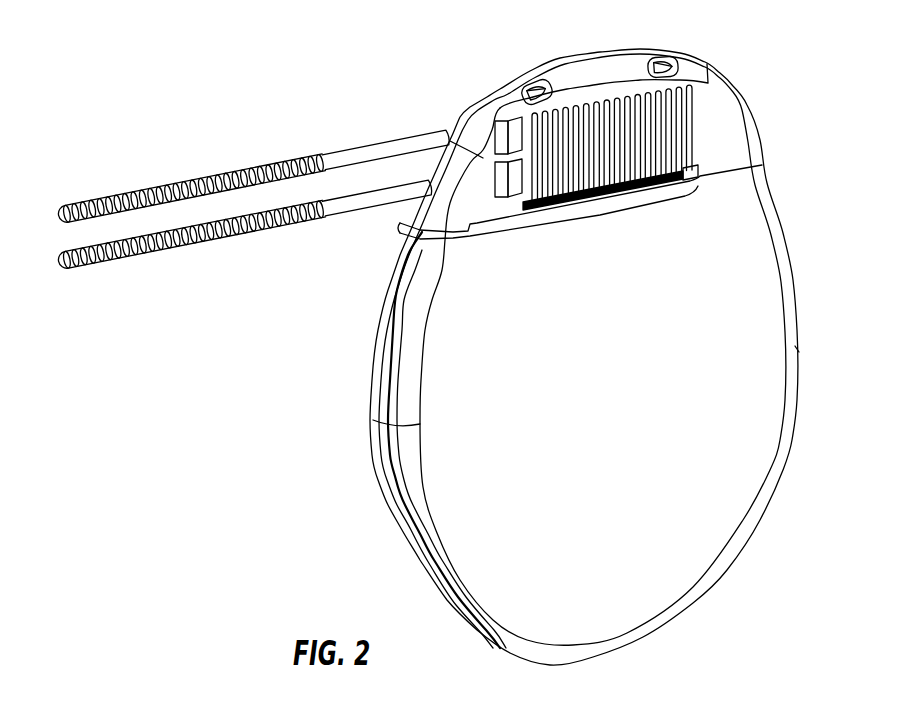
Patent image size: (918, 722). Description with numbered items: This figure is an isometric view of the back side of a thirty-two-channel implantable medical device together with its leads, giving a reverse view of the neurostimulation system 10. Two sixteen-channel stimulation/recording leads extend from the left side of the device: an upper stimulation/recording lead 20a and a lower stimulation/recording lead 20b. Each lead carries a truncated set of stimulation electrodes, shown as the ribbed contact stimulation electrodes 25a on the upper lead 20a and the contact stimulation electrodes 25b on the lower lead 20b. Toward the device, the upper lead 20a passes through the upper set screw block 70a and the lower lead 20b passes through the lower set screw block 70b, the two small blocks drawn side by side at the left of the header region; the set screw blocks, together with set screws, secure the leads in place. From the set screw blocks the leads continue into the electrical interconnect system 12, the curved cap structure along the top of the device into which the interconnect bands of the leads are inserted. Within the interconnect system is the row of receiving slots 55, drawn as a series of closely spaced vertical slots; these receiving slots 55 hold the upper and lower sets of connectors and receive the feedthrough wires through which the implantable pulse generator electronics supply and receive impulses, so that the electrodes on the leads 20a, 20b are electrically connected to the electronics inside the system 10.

The neurostimulation system 10 is at (713, 34).
The electrical interconnect system 12 is at (603, 50).
The upper stimulation/recording lead 20a is at (380, 146).
The lower stimulation/recording lead 20b is at (373, 203).
The stimulation electrodes 25a is at (137, 197).
The stimulation electrodes 25b is at (143, 248).
The receiving slots 55 is at (698, 188).
The upper set screw block 70a is at (500, 124).
The lower set screw block 70b is at (503, 184).